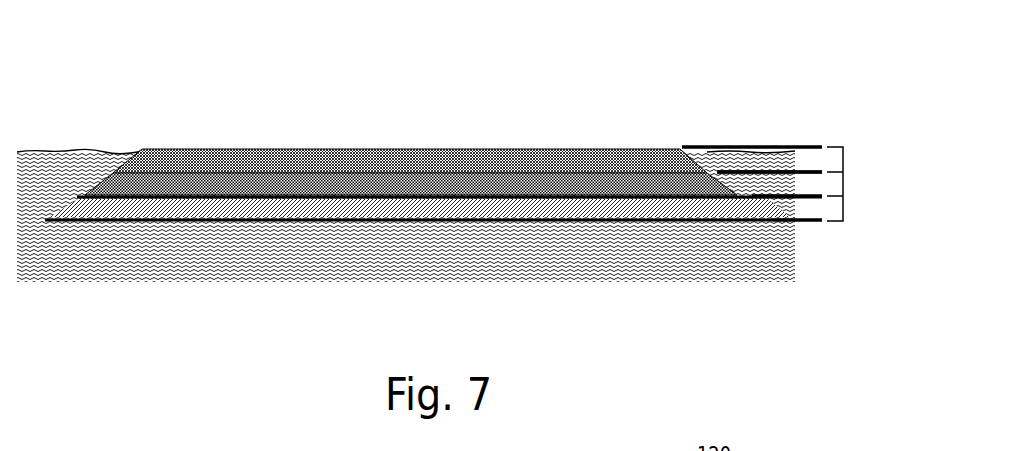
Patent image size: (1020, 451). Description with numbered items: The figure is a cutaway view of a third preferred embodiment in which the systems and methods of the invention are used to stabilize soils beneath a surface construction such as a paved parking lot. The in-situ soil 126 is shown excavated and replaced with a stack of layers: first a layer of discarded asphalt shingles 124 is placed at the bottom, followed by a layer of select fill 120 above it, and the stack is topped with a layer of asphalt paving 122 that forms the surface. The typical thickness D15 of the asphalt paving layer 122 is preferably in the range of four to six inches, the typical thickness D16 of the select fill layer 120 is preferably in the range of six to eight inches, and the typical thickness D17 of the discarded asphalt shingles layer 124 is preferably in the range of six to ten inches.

The select fill layer 120 is at (99, 177).
The asphalt paving layer 122 is at (349, 140).
The discarded asphalt shingles layer 124 is at (625, 210).
The in-situ soil 126 is at (176, 250).
The thickness of asphalt paving layer D15 is at (843, 158).
The thickness of select fill layer D16 is at (843, 183).
The thickness of discarded asphalt shingles layer D17 is at (843, 207).